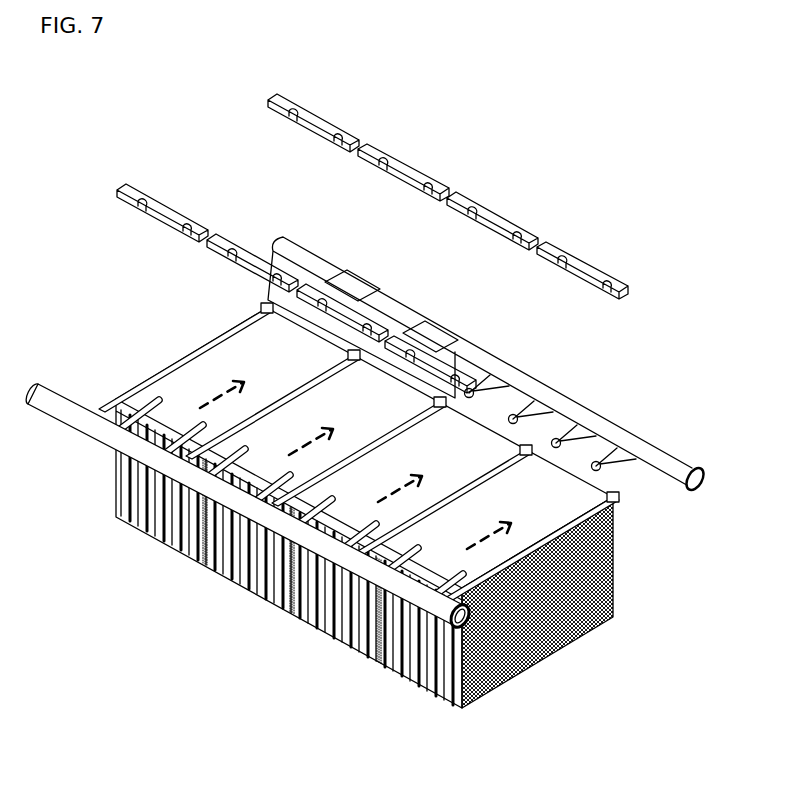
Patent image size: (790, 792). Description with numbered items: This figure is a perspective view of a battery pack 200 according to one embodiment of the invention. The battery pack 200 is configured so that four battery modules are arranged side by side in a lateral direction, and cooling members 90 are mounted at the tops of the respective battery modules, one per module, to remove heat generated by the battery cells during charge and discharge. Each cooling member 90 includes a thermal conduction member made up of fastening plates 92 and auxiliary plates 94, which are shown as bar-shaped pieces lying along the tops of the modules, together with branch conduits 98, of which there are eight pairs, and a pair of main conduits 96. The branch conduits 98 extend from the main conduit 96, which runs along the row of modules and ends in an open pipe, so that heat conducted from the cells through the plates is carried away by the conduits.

The battery pack 200 is at (71, 134).
The cooling member 90 is at (633, 291).
The auxiliary plate 94 is at (587, 313).
The main conduit 96 is at (658, 453).
The branch conduit 98 is at (622, 482).
The fastening plate 92 is at (607, 510).